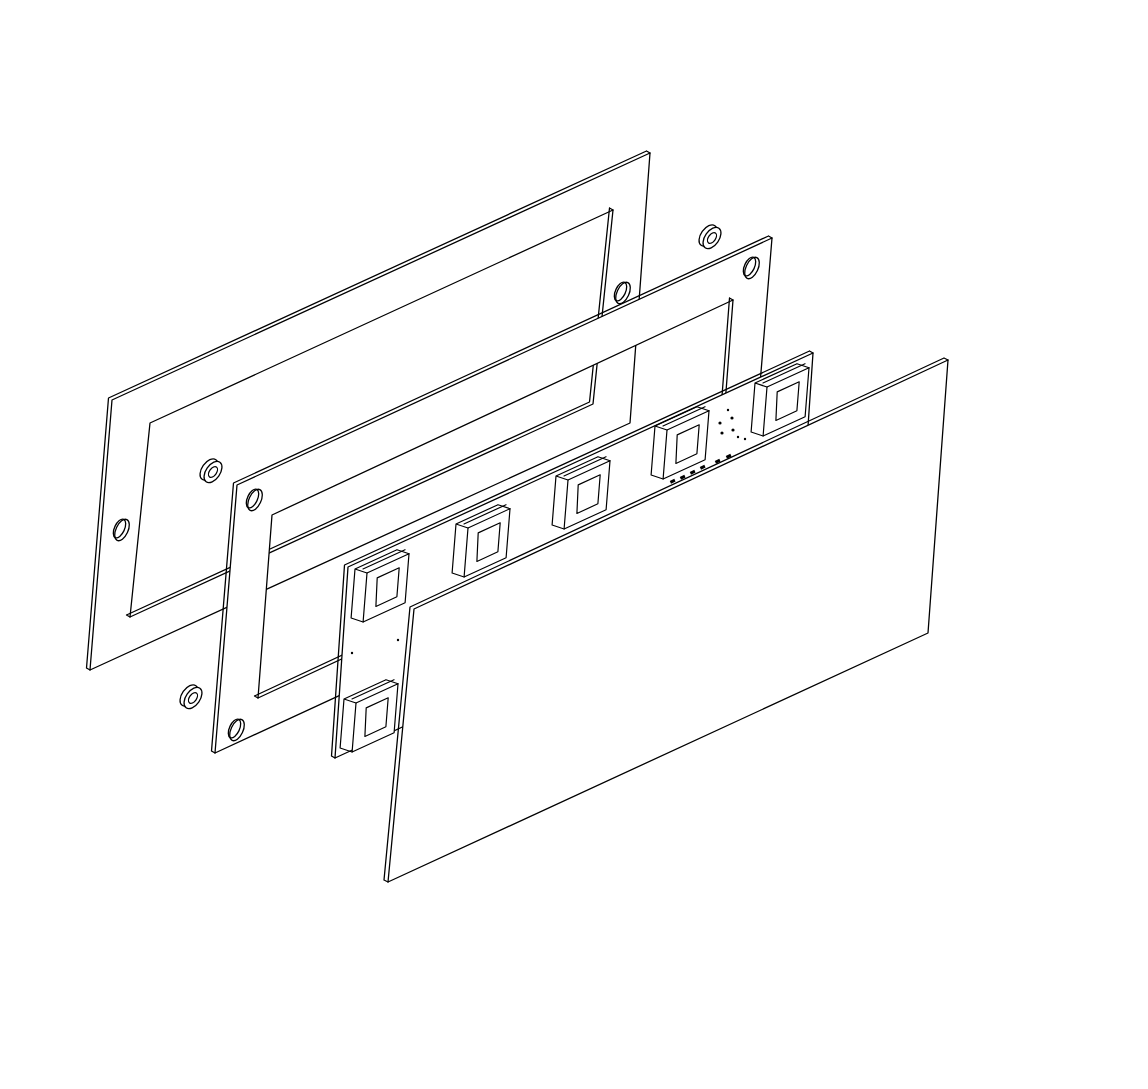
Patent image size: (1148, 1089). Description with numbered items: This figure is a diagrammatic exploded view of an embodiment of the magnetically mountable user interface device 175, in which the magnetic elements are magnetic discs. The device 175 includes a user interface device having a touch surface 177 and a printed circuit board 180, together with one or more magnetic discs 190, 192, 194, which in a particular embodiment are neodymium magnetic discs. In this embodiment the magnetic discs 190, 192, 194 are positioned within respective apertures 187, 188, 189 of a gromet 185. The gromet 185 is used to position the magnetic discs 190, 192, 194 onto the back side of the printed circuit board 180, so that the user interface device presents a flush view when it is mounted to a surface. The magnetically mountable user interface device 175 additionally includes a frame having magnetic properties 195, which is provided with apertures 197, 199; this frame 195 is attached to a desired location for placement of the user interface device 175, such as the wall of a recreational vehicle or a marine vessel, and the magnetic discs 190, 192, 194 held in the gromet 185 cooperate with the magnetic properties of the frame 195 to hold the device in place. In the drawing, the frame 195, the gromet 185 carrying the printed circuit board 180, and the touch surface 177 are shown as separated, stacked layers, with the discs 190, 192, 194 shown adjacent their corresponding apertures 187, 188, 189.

The magnetically mountable user interface device 175 is at (733, 78).
The touch surface 177 is at (875, 393).
The printed circuit board 180 is at (792, 361).
The gromet 185 is at (740, 252).
The aperture 187 is at (762, 265).
The aperture 188 is at (258, 490).
The aperture 189 is at (237, 742).
The magnetic disc 190 is at (713, 229).
The magnetic disc 192 is at (215, 462).
The magnetic disc 194 is at (190, 710).
The frame having magnetic properties 195 is at (604, 170).
The aperture 197 is at (111, 531).
The aperture 199 is at (612, 296).